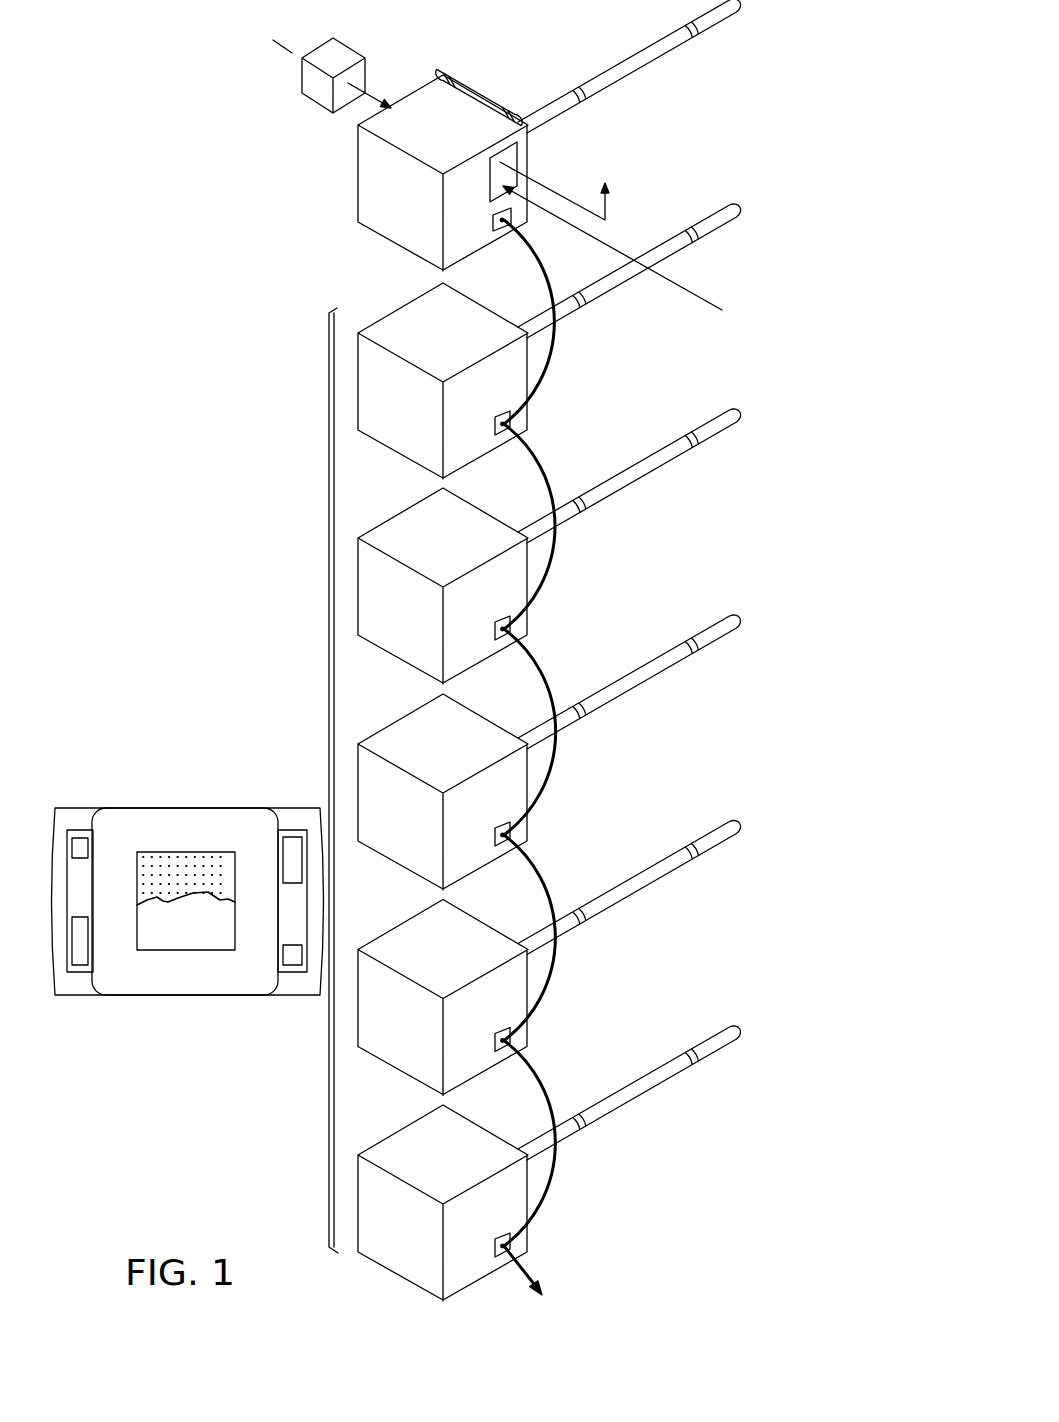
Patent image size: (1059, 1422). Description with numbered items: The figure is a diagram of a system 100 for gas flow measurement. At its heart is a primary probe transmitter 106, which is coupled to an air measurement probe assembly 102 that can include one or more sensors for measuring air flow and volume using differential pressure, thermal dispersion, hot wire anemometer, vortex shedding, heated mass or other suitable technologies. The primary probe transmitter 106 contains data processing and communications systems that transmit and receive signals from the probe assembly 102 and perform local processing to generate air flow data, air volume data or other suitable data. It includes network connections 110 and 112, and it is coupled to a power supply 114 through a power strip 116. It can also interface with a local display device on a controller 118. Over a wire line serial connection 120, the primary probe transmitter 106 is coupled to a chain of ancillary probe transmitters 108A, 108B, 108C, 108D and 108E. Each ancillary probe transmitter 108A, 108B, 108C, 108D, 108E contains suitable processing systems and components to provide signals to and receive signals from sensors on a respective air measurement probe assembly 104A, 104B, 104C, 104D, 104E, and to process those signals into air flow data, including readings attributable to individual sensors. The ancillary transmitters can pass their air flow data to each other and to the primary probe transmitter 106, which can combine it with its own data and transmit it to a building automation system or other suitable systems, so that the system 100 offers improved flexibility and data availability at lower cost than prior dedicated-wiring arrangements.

The system for gas flow measurement 100 is at (848, 189).
The air measurement probe assembly 102 is at (713, 45).
The air measurement probe assembly 104A is at (713, 240).
The air measurement probe assembly 104B is at (713, 445).
The air measurement probe assembly 104C is at (713, 651).
The air measurement probe assembly 104D is at (713, 856).
The air measurement probe assembly 104E is at (713, 1062).
The primary probe transmitter 106 is at (420, 217).
The ancillary probe transmitter 108A is at (430, 422).
The ancillary probe transmitter 108B is at (430, 627).
The ancillary probe transmitter 108C is at (430, 833).
The ancillary probe transmitter 108D is at (430, 1038).
The ancillary probe transmitter 108E is at (430, 1244).
The network connection 110 is at (616, 277).
The network connection 112 is at (609, 203).
The power supply 114 is at (285, 50).
The power strip 116 is at (340, 47).
The controller 118 is at (333, 776).
The wire line serial connection 120 is at (551, 1189).